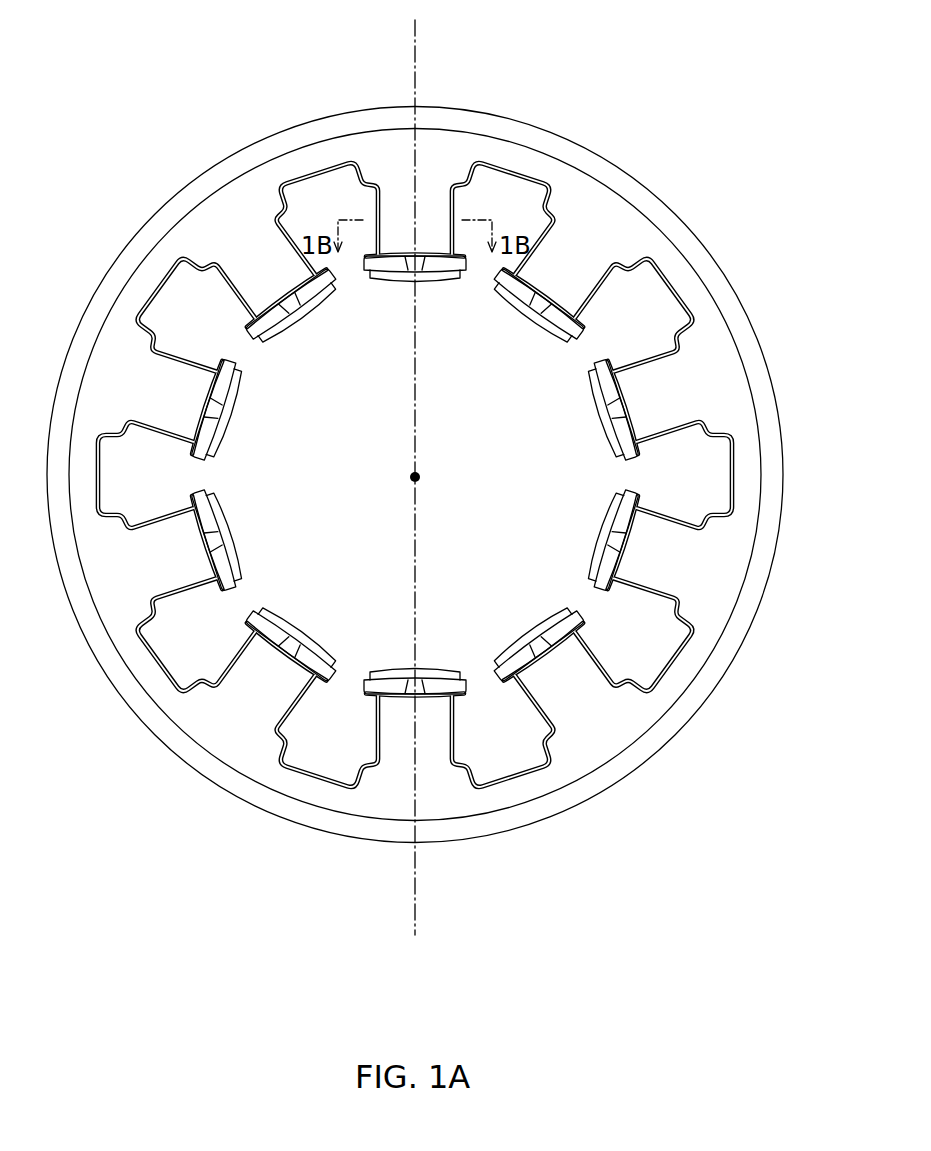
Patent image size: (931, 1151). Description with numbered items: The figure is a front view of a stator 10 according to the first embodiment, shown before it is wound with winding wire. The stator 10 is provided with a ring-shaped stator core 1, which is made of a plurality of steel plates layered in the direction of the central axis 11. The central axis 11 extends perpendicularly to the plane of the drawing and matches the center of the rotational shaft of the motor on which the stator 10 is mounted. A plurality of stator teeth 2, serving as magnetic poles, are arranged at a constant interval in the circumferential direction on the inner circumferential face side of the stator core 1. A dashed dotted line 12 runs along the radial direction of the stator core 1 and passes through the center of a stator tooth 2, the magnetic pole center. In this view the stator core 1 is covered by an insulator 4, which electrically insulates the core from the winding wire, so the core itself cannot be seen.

The stator 10 is at (130, 149).
The stator core 1 is at (617, 165).
The stator teeth 2 is at (655, 563).
The insulator 4 is at (603, 733).
The central axis 11 is at (420, 474).
The dashed dotted line 12 is at (415, 63).